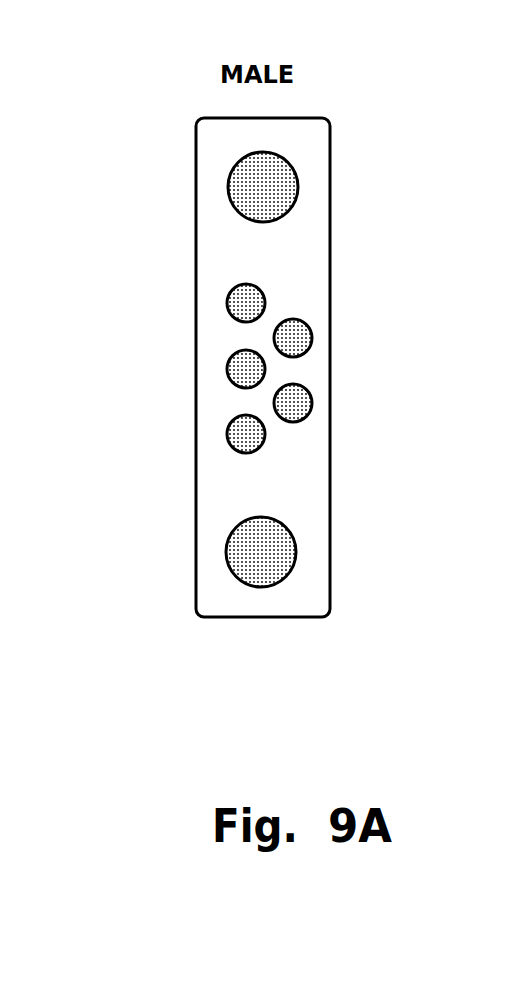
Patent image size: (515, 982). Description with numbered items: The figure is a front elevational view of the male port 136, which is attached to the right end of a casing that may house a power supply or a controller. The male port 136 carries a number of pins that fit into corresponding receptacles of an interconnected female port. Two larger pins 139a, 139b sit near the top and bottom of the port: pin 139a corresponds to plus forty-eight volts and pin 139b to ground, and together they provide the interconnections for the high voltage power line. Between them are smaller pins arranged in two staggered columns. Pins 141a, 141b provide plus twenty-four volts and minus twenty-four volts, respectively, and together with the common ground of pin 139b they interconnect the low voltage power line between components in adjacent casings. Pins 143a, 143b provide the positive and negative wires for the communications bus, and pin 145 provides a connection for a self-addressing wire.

The male port 136 is at (367, 103).
The pin 139a is at (298, 188).
The pin 139b is at (296, 540).
The pin 141a is at (227, 304).
The pin 141b is at (312, 343).
The pin 143a is at (227, 370).
The pin 143b is at (312, 408).
The pin 145 is at (231, 447).